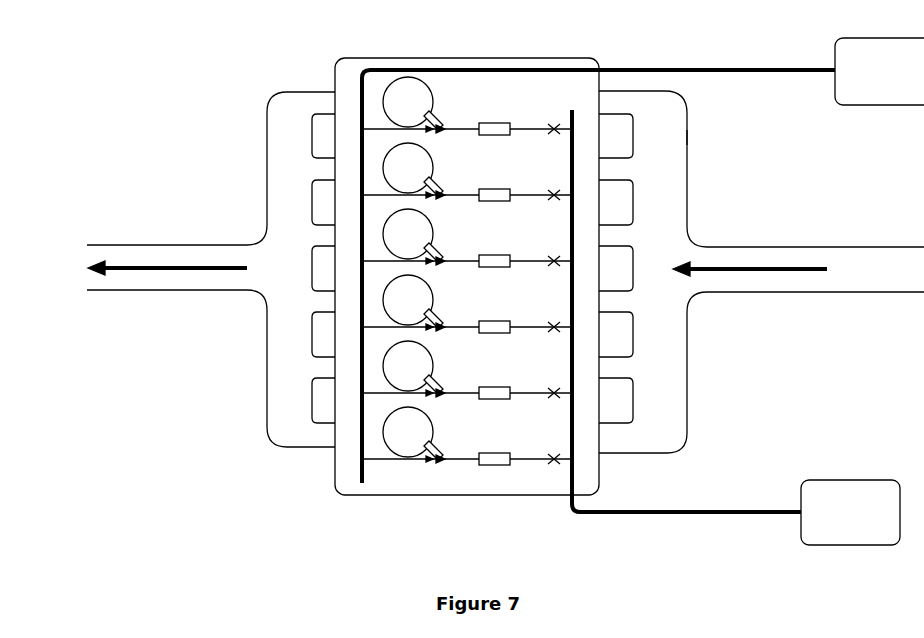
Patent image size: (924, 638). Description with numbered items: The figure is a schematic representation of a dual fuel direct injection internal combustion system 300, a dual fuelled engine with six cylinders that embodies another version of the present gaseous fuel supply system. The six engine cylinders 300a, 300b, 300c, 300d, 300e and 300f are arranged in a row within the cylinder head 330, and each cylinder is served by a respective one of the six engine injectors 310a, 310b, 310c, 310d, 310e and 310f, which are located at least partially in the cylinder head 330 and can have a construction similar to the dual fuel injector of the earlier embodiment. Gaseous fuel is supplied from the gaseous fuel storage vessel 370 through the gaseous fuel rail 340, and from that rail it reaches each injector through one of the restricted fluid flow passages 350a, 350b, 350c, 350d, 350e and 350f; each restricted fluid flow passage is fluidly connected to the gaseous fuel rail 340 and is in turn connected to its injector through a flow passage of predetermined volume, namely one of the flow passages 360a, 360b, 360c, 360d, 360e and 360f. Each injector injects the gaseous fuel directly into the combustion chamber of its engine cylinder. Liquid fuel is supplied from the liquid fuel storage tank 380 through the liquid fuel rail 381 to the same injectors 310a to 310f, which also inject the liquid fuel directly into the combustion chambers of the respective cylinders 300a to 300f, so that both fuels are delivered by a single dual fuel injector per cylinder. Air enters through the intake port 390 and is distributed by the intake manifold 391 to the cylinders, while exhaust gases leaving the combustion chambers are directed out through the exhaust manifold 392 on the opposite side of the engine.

The dual fuel direct injection internal combustion system 300 is at (182, 128).
The cylinder head 330 is at (466, 58).
The liquid fuel rail 381 is at (640, 70).
The liquid fuel storage tank 380 is at (879, 71).
The gaseous fuel storage vessel 370 is at (850, 512).
The gaseous fuel rail 340 is at (703, 514).
The intake manifold 391 is at (688, 138).
The intake port 390 is at (730, 247).
The exhaust manifold 392 is at (160, 245).
The engine cylinder 300a is at (408, 102).
The engine cylinder 300b is at (408, 168).
The engine cylinder 300c is at (408, 234).
The engine cylinder 300d is at (408, 300).
The engine cylinder 300e is at (408, 366).
The engine cylinder 300f is at (408, 432).
The engine injector 310a is at (467, 115).
The engine injector 310b is at (467, 181).
The engine injector 310c is at (467, 247).
The engine injector 310d is at (467, 313).
The engine injector 310e is at (467, 379).
The engine injector 310f is at (467, 445).
The restricted fluid flow passage 350a is at (554, 126).
The restricted fluid flow passage 350b is at (554, 192).
The restricted fluid flow passage 350c is at (554, 258).
The restricted fluid flow passage 350d is at (554, 324).
The restricted fluid flow passage 350e is at (554, 390).
The restricted fluid flow passage 350f is at (554, 456).
The flow passage of predetermined volume 360a is at (495, 122).
The flow passage of predetermined volume 360b is at (495, 188).
The flow passage of predetermined volume 360c is at (495, 254).
The flow passage of predetermined volume 360d is at (495, 320).
The flow passage of predetermined volume 360e is at (495, 386).
The flow passage of predetermined volume 360f is at (495, 452).